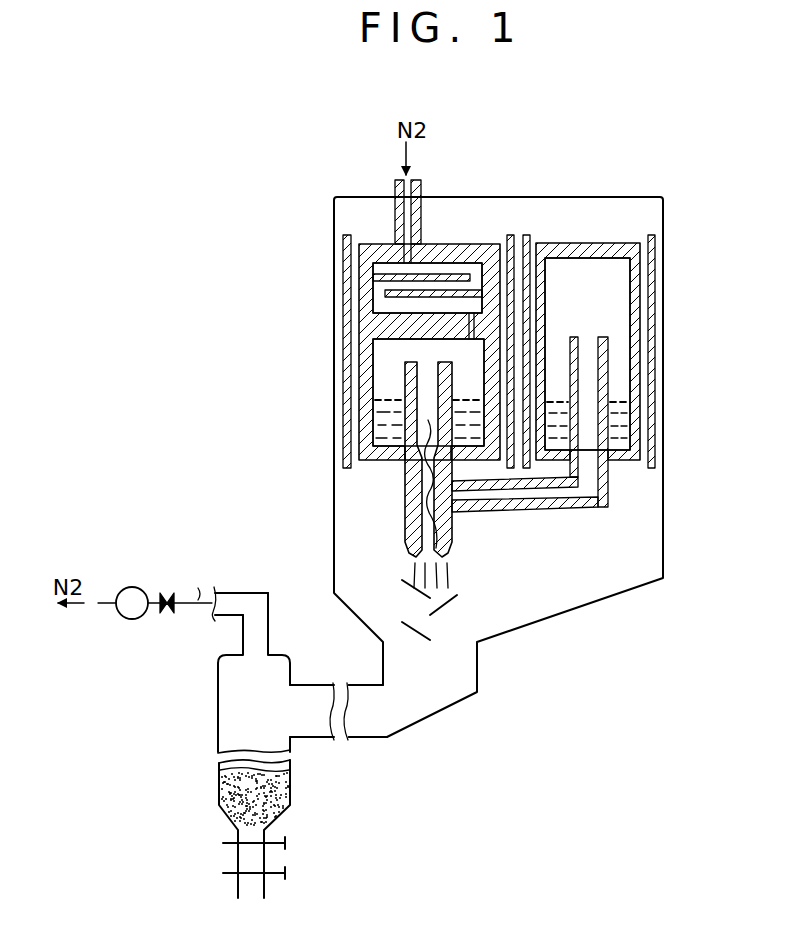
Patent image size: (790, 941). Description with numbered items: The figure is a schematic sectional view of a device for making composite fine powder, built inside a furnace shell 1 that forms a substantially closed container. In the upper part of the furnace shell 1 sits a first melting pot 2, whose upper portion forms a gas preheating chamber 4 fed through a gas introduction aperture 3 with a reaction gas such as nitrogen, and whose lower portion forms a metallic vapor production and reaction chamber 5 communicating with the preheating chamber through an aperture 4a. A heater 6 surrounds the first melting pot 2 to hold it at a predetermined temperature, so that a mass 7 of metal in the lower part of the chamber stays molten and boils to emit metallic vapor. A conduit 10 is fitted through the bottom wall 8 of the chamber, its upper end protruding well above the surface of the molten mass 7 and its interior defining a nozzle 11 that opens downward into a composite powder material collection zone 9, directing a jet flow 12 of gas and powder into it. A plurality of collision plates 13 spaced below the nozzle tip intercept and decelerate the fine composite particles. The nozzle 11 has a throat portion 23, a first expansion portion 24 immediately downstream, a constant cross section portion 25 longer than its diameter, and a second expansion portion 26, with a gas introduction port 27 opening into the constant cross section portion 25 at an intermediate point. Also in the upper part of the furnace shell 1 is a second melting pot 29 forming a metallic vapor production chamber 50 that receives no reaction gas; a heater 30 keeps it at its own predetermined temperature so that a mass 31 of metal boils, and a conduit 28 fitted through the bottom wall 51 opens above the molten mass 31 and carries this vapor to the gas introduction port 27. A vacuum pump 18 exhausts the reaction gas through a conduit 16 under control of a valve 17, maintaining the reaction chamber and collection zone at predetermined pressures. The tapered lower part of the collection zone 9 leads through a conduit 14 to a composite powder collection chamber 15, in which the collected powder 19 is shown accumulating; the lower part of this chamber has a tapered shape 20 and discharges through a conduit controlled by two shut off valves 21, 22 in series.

The furnace shell 1 is at (664, 205).
The first melting pot 2 is at (363, 353).
The gas introduction aperture 3 is at (423, 183).
The gas preheating chamber 4 is at (380, 303).
The aperture 4a is at (471, 339).
The metallic vapor production and reaction chamber 5 is at (385, 360).
The heater 6 is at (509, 237).
The mass of metal 7 is at (382, 420).
The bottom wall 8 is at (386, 453).
The composite powder material collection zone 9 is at (487, 595).
The conduit 10 is at (447, 386).
The nozzle 11 is at (412, 544).
The jet flow 12 is at (449, 576).
The collision plates 13 is at (449, 597).
The conduit 14 is at (334, 686).
The composite powder collection chamber 15 is at (222, 706).
The conduit 16 is at (212, 598).
The valve 17 is at (167, 593).
The vacuum pump 18 is at (131, 588).
The powder 19 is at (272, 793).
The tapered shape 20 is at (228, 812).
The shut off valve 21 is at (289, 844).
The shut off valve 22 is at (289, 874).
The throat portion 23 is at (212, 866).
The first expansion portion 24 is at (434, 468).
The constant cross section portion 25 is at (421, 498).
The second expansion portion 26 is at (449, 546).
The gas introduction port 27 is at (463, 505).
The conduit 28 is at (607, 481).
The second melting pot 29 is at (637, 317).
The heater 30 is at (656, 254).
The mass of metal 31 is at (623, 412).
The metallic vapor production chamber 50 is at (598, 292).
The bottom wall 51 is at (622, 458).